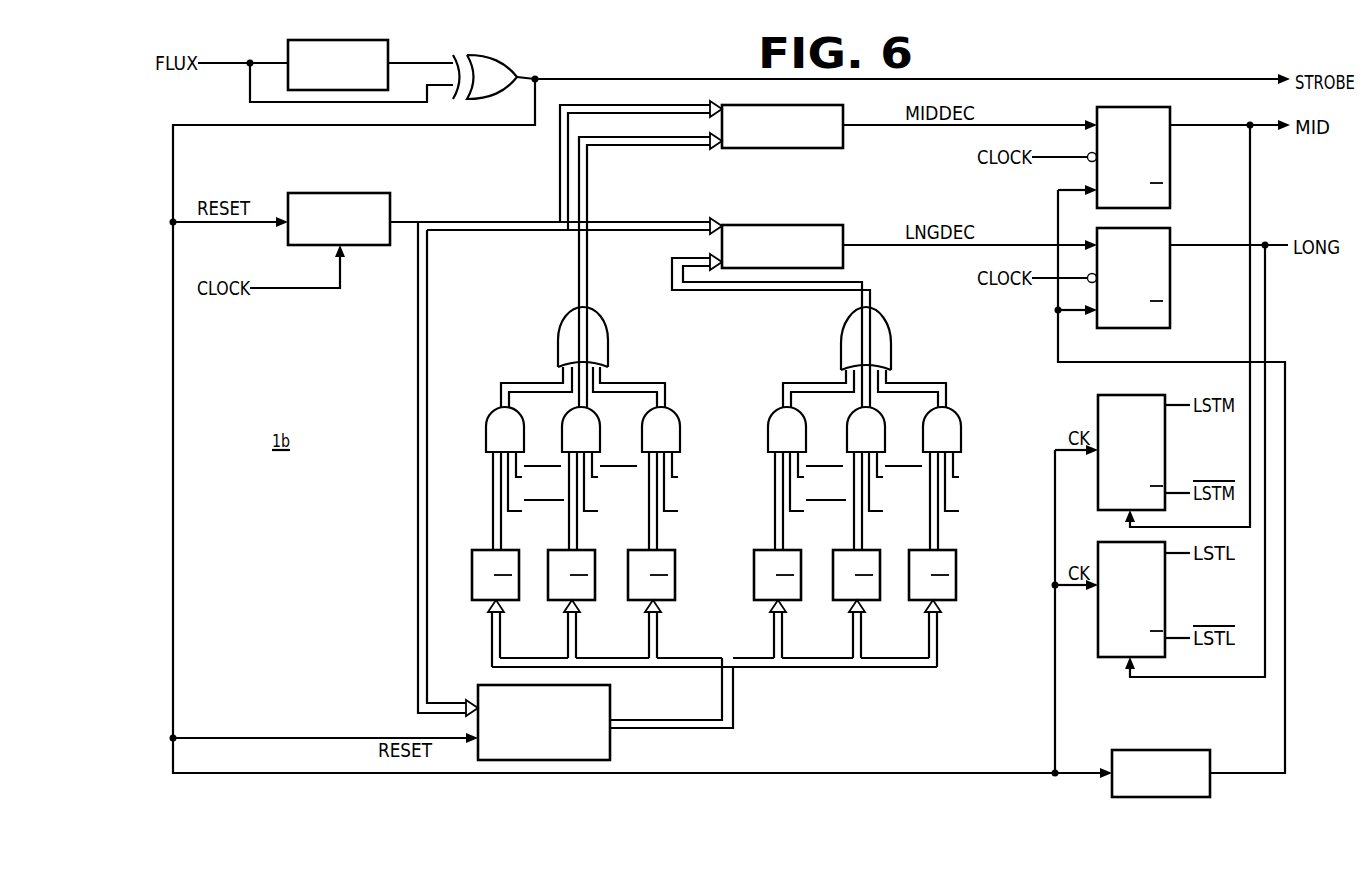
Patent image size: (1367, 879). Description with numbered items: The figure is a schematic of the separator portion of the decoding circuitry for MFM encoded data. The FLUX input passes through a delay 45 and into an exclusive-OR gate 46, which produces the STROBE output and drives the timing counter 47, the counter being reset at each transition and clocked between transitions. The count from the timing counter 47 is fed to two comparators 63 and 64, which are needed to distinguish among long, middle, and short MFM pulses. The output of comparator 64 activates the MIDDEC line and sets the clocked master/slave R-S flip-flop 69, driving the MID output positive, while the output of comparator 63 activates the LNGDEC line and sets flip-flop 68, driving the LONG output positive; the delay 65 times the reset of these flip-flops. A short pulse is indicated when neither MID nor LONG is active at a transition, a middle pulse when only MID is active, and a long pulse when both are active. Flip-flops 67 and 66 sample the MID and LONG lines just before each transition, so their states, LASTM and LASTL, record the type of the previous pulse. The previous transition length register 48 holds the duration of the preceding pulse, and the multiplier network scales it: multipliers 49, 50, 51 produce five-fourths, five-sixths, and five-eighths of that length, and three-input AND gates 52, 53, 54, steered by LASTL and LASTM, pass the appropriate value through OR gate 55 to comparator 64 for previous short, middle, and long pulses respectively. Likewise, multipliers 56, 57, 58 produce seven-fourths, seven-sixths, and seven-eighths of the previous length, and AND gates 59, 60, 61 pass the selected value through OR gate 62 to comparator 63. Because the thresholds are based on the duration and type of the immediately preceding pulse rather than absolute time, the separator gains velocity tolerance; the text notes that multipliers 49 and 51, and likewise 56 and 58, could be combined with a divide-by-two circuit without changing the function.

The delay 45 is at (312, 63).
The exclusive-OR gate 46 is at (503, 68).
The timing counter 47 is at (360, 203).
The previous transition length register 48 is at (571, 720).
The 5/4 multiplier 49 is at (482, 592).
The 5/6 multiplier 50 is at (560, 592).
The 5/8 multiplier 51 is at (641, 592).
The three-input AND gate 52 is at (495, 439).
The three-input AND gate 53 is at (571, 439).
The three-input AND gate 54 is at (651, 439).
The OR gate 55 is at (573, 357).
The 7/4 multiplier 56 is at (790, 592).
The 7/6 multiplier 57 is at (868, 592).
The 7/8 multiplier 58 is at (946, 592).
The three-input AND gate 59 is at (777, 439).
The three-input AND gate 60 is at (856, 439).
The three-input AND gate 61 is at (932, 439).
The OR gate 62 is at (869, 357).
The comparator 63 is at (802, 227).
The comparator 64 is at (802, 114).
The delay 65 is at (1183, 756).
The flip-flop 66 is at (1123, 613).
The flip-flop 67 is at (1105, 452).
The clocked master/slave R-S flip-flop 68 is at (1156, 278).
The clocked master/slave R-S flip-flop 69 is at (1158, 157).